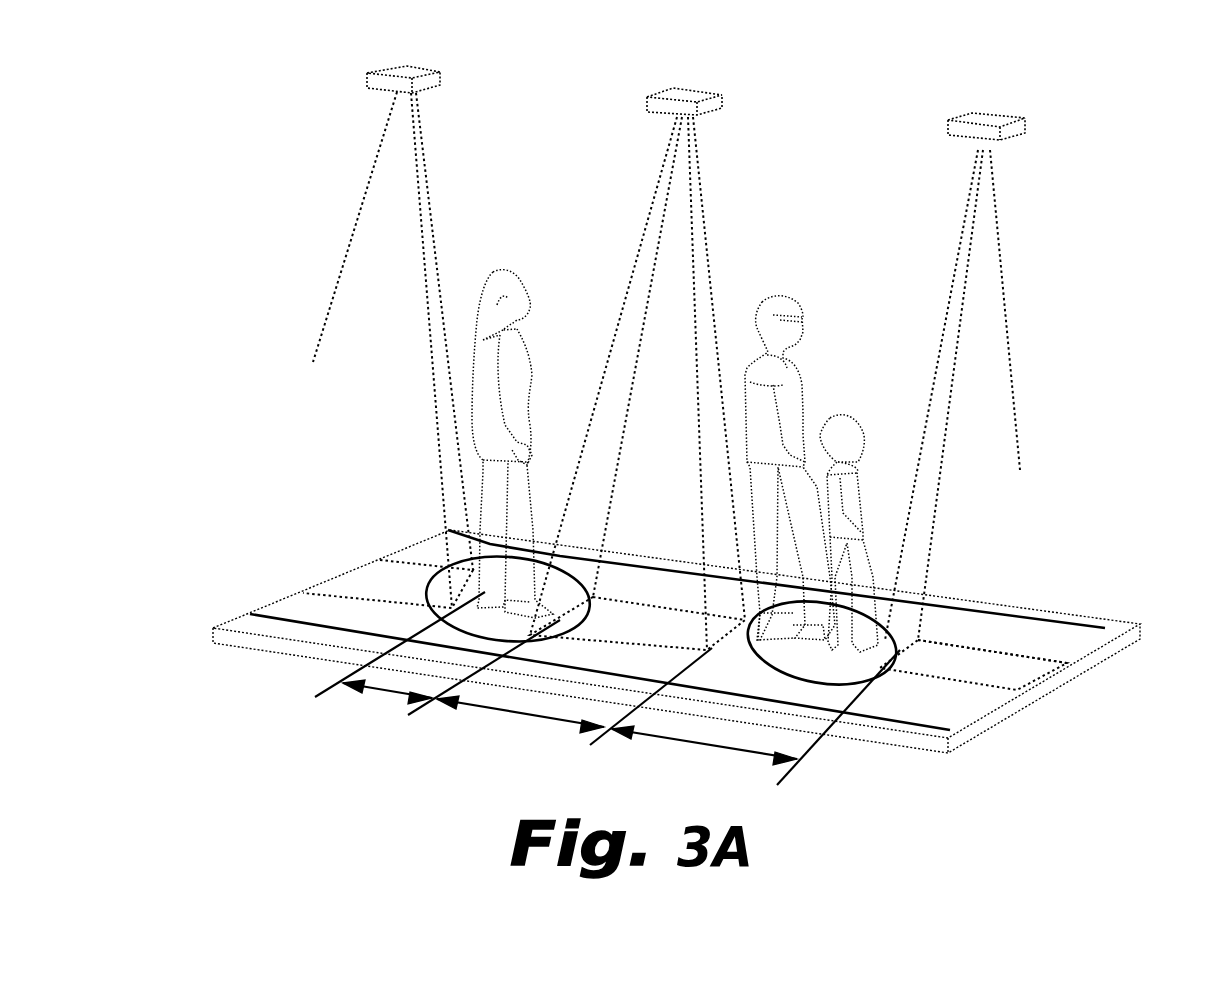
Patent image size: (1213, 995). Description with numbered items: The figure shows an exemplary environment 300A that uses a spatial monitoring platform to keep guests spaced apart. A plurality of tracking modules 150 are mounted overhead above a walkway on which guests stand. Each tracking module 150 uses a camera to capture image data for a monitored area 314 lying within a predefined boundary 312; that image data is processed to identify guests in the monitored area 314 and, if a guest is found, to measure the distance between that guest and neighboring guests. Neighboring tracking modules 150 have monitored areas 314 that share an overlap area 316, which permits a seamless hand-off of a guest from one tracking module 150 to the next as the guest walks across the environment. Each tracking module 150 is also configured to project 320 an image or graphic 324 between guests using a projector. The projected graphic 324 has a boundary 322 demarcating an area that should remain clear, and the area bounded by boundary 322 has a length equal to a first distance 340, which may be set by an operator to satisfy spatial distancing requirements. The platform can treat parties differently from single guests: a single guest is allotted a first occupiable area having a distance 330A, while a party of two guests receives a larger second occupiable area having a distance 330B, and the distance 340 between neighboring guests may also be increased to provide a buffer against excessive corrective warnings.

The environment 300A is at (176, 52).
The tracking module 150 is at (647, 96).
The projection 320 is at (700, 183).
The projected graphic 324 is at (645, 620).
The boundary 322 is at (1050, 658).
The predefined boundary 312 is at (320, 630).
The monitored area 314 is at (363, 618).
The overlap area 316 is at (820, 660).
The distance 330A is at (384, 704).
The distance 330B is at (704, 754).
The first distance 340 is at (520, 721).